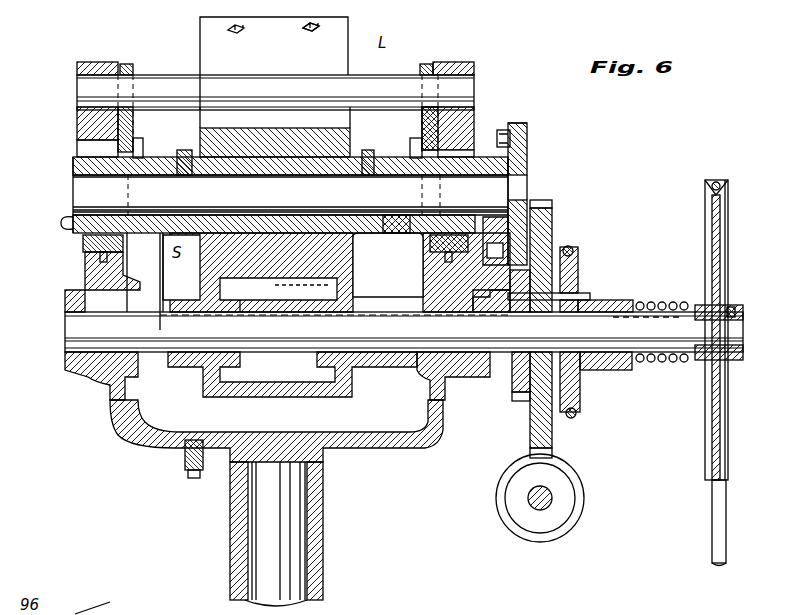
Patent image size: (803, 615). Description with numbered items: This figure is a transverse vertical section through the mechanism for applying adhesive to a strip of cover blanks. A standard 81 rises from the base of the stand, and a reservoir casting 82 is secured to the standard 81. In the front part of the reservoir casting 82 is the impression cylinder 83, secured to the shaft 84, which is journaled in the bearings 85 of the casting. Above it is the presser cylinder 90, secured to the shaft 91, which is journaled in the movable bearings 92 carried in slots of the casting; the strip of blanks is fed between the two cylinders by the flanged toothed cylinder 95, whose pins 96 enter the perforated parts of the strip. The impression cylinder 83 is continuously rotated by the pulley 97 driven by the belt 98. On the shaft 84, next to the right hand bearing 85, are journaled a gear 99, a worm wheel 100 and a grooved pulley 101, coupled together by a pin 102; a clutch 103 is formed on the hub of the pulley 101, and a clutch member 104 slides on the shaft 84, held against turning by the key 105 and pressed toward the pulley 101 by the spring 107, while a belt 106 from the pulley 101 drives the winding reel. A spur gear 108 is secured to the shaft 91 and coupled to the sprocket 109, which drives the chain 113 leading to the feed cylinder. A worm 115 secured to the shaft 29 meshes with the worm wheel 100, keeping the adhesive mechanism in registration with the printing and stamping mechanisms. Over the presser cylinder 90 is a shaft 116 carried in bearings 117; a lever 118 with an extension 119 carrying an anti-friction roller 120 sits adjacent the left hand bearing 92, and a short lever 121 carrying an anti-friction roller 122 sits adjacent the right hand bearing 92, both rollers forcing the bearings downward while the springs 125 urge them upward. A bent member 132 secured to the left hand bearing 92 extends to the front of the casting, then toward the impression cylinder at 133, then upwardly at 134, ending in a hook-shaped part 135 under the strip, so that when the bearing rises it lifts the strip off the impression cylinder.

The shaft 29 is at (536, 508).
The standard 81 is at (255, 540).
The reservoir casting 82 is at (388, 445).
The impression cylinder 83 is at (215, 395).
The shaft 84 is at (65, 345).
The bearings 85 is at (95, 372).
The presser cylinder 90 is at (290, 130).
The shaft 91 is at (73, 193).
The movable bearings 92 is at (73, 167).
The flanged toothed cylinder 95 is at (274, 63).
The pins 96 is at (312, 33).
The pulley 97 is at (710, 450).
The belt 98 is at (712, 560).
The gear 99 is at (513, 397).
The worm wheel 100 is at (532, 438).
The grooved pulley 101 is at (578, 414).
The pin 102 is at (582, 292).
The clutch 103 is at (588, 375).
The clutch member 104 is at (625, 372).
The key 105 is at (645, 303).
The belt 106 is at (572, 245).
The spring 107 is at (660, 365).
The spur gear 108 is at (528, 140).
The sprocket 109 is at (518, 130).
The chain 113 is at (502, 130).
The worm 115 is at (500, 512).
The shaft 116 is at (77, 95).
The bearings 117 is at (80, 62).
The lever 118 is at (133, 68).
The extension 119 is at (133, 118).
The anti-friction roller 120 is at (143, 147).
The short lever 121 is at (422, 118).
The anti-friction roller 122 is at (410, 146).
The springs 125 is at (88, 250).
The bent member 132 is at (145, 272).
The portion extending toward impression cylinder 133 is at (335, 324).
The upwardly extending portion 134 is at (272, 300).
The hook-shaped part 135 is at (283, 285).